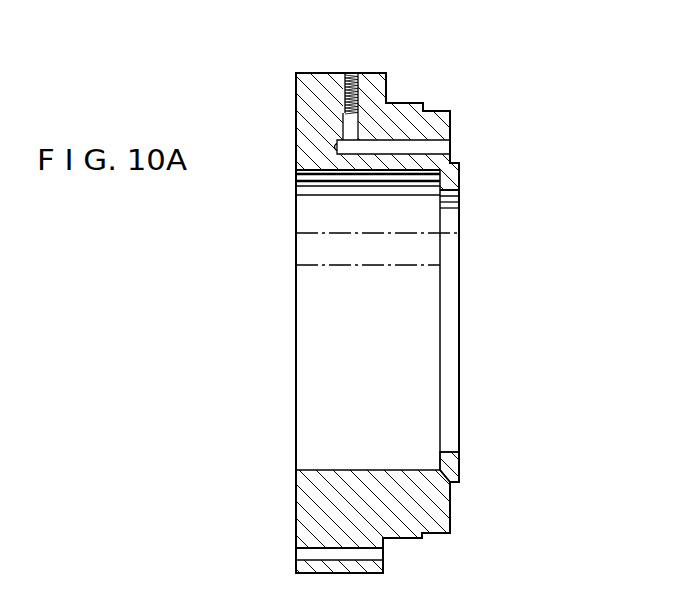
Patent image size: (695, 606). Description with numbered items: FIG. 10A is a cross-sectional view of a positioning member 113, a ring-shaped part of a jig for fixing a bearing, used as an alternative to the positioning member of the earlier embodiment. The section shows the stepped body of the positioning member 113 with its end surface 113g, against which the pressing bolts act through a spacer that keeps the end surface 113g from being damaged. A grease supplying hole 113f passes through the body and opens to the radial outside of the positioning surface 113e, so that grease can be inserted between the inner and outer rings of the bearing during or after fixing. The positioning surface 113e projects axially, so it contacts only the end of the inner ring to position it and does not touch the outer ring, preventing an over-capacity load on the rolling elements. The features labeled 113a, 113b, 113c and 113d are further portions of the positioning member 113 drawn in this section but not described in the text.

The positioning member 113 is at (450, 122).
The cylindrical inner wall portion 113a is at (313, 468).
The annular groove 113b is at (390, 79).
The chamfered flange portion 113c is at (438, 462).
The bottom flange 113d is at (320, 564).
The positioning surface 113e is at (460, 469).
The grease supplying hole 113f is at (333, 108).
The end surface 113g is at (296, 95).